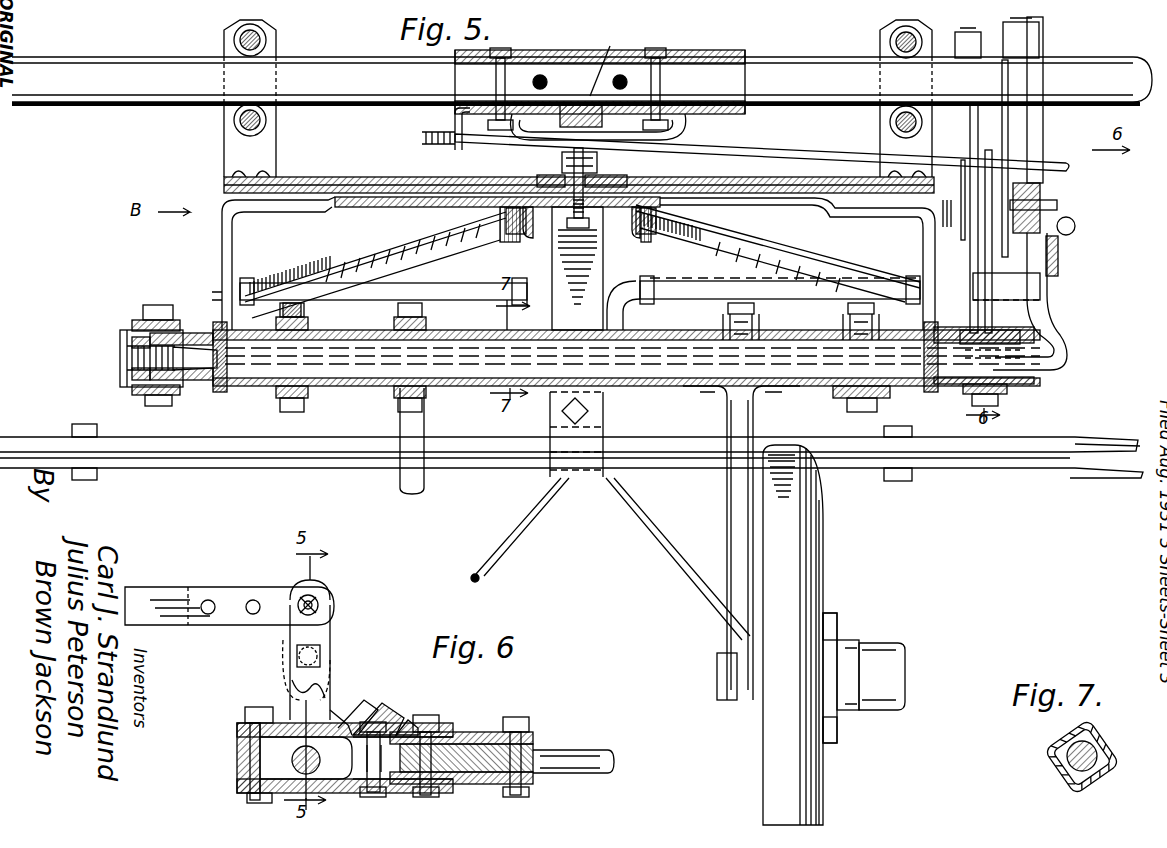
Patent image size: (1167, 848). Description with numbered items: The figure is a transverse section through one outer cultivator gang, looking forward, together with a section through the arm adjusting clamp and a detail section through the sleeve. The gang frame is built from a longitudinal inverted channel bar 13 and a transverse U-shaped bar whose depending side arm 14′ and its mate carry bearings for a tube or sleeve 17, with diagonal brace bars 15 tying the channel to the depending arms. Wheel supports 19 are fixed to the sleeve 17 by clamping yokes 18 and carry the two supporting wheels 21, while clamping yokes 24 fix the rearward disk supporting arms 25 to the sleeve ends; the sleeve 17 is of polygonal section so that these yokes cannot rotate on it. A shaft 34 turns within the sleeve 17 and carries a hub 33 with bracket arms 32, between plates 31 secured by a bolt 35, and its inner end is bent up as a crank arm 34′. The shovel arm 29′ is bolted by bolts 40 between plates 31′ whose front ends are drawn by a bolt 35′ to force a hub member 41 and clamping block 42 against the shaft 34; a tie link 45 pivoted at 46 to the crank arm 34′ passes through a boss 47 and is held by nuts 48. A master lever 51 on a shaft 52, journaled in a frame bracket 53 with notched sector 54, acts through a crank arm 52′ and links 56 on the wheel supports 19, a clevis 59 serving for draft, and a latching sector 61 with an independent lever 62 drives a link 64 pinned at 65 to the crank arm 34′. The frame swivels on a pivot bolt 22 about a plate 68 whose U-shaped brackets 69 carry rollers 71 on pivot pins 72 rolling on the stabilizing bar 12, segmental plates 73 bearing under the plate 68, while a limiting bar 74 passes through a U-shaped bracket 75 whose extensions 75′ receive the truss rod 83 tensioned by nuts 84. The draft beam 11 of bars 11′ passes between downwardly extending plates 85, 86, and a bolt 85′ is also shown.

In FIG. 5, the transverse draft beam 11 is at (232, 470).
In FIG. 5, the draft beam bar 11′ is at (1110, 440).
In FIG. 5, the stabilizing bar 12 is at (710, 64).
In FIG. 5, the channel bar 13 is at (548, 252).
In FIG. 5, the depending side arm 14′ is at (222, 240).
In FIG. 5, the diagonal brace bar 15 is at (368, 258).
In FIG. 5, the tube or sleeve 17 is at (572, 52).
In FIG. 7, the tube or sleeve 17 is at (1072, 772).
In FIG. 5, the clamping yoke 18 is at (398, 310).
In FIG. 5, the wheel support 19 is at (412, 494).
In FIG. 5, the supporting wheel 21 is at (810, 792).
In FIG. 5, the pivot bolt 22 is at (560, 156).
In FIG. 5, the clamping yoke 24 is at (304, 310).
In FIG. 5, the disk supporting arm 25 is at (280, 408).
In FIG. 6, the shovel supporting arm 29′ is at (600, 750).
In FIG. 5, the plate 31 is at (134, 320).
In FIG. 5, the plate 31′ is at (1040, 322).
In FIG. 6, the plate 31′ is at (510, 728).
In FIG. 5, the bracket arm 32 is at (120, 338).
In FIG. 6, the bracket arm 32 is at (240, 738).
In FIG. 5, the hub 33 is at (160, 407).
In FIG. 5, the shaft 34 is at (318, 392).
In FIG. 6, the shaft 34 is at (250, 792).
In FIG. 7, the shaft 34 is at (1058, 770).
In FIG. 5, the crank arm 34′ is at (1058, 254).
In FIG. 6, the crank arm 34′ is at (290, 686).
In FIG. 5, the bolt 35 is at (158, 305).
In FIG. 6, the bolt 35′ is at (256, 706).
In FIG. 6, the bolt 40 is at (432, 730).
In FIG. 5, the hub member 41 is at (1036, 380).
In FIG. 6, the hub member 41 is at (318, 790).
In FIG. 5, the clamping block 42 is at (1052, 332).
In FIG. 6, the clamping block 42 is at (342, 712).
In FIG. 5, the link 45 is at (1056, 222).
In FIG. 6, the link 45 is at (340, 700).
In FIG. 5, the pivotal connection 46 is at (1076, 230).
In FIG. 6, the pivotal connection 46 is at (322, 648).
In FIG. 6, the boss 47 is at (405, 718).
In FIG. 5, the nut 48 is at (712, 390).
In FIG. 6, the nut 48 is at (370, 712).
In FIG. 5, the master depth adjusting and lifting lever 51 is at (985, 34).
In FIG. 5, the shaft 52 is at (722, 312).
In FIG. 5, the crank arm 52′ is at (628, 388).
In FIG. 5, the frame bracket 53 is at (942, 205).
In FIG. 5, the notched sector 54 is at (970, 131).
In FIG. 5, the link member 56 is at (610, 559).
In FIG. 5, the clevis 59 is at (228, 392).
In FIG. 5, the latching sector 61 is at (1010, 130).
In FIG. 5, the independent depth adjusting or lifting lever 62 is at (1044, 40).
In FIG. 6, the link 64 is at (180, 626).
In FIG. 6, the pivot pin 65 is at (318, 600).
In FIG. 5, the bar or plate 68 is at (358, 177).
In FIG. 5, the U-shaped bracket 69 is at (224, 150).
In FIG. 5, the roller 71 is at (236, 30).
In FIG. 5, the pivot pin 72 is at (262, 38).
In FIG. 5, the segmental plate 73 is at (306, 177).
In FIG. 5, the bar 74 is at (583, 58).
In FIG. 5, the U-shaped bracket 75 is at (470, 118).
In FIG. 5, the bracket extension 75′ is at (452, 146).
In FIG. 5, the truss rod 83 is at (754, 136).
In FIG. 5, the nut 84 is at (422, 137).
In FIG. 5, the plate 85 is at (604, 432).
In FIG. 5, the bolt 85′ is at (558, 276).
In FIG. 5, the plate 86 is at (560, 478).